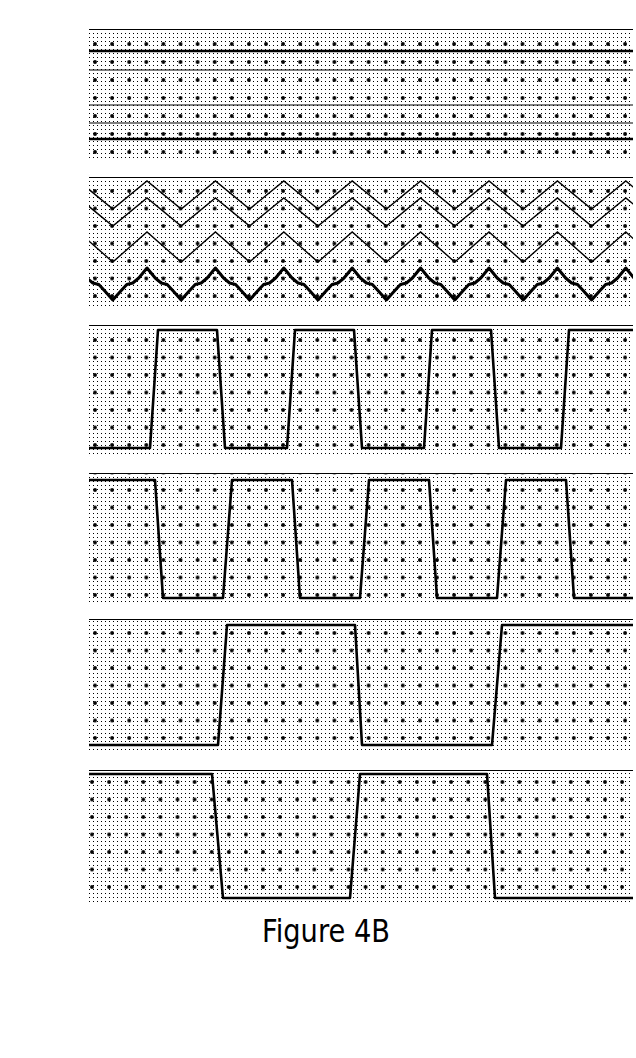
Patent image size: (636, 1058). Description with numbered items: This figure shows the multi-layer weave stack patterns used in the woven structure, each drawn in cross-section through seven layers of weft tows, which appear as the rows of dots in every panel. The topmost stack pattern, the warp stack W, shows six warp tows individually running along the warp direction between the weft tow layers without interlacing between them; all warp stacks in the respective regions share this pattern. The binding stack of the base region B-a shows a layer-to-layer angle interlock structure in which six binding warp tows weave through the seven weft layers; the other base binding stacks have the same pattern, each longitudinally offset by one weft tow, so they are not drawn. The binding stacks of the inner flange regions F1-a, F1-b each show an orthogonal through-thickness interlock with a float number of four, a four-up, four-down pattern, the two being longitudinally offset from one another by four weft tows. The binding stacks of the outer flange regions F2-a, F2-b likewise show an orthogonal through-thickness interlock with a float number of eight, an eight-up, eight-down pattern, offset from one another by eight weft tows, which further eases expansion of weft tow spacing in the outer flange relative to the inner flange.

The warp stack W is at (330, 94).
The binding stack of the base region B-a is at (323, 242).
The binding stack of the inner flange region F1-a is at (325, 391).
The binding stack of the inner flange region F1-b is at (325, 539).
The binding stack of the outer flange region F2-a is at (325, 684).
The binding stack of the outer flange region F2-b is at (325, 836).